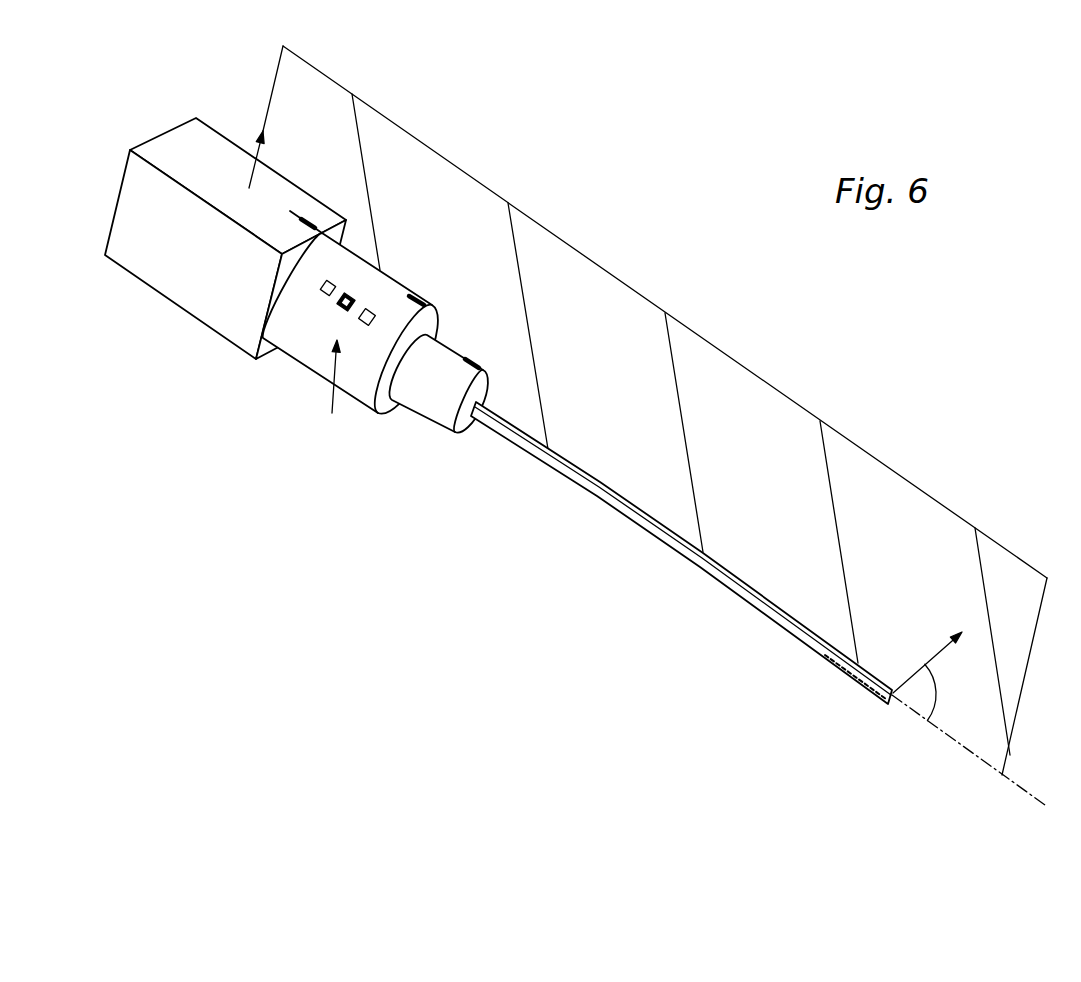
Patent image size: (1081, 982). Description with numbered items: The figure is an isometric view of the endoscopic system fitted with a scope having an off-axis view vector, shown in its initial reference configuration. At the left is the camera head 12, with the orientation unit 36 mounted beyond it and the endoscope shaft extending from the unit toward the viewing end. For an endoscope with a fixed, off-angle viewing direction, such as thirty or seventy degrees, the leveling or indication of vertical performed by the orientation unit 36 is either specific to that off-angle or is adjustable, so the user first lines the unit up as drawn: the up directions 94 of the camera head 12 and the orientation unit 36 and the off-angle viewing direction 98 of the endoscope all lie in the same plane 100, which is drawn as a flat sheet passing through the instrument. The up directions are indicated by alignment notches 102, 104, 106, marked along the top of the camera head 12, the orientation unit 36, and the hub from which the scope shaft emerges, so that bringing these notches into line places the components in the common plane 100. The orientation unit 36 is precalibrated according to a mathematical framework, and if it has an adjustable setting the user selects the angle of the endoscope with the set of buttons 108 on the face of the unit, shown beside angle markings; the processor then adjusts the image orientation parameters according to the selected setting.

The camera head 12 is at (178, 298).
The orientation unit 36 is at (295, 356).
The up directions 94 is at (250, 176).
The off-angle viewing direction 98 is at (935, 652).
The plane 100 is at (743, 382).
The alignment notch 102 is at (309, 224).
The alignment notch 104 is at (414, 296).
The alignment notch 106 is at (473, 366).
The set of buttons 108 is at (334, 393).